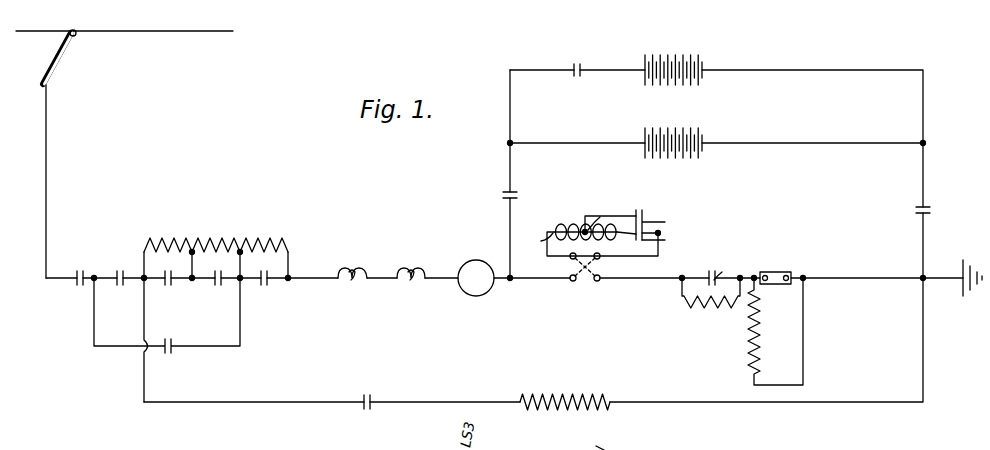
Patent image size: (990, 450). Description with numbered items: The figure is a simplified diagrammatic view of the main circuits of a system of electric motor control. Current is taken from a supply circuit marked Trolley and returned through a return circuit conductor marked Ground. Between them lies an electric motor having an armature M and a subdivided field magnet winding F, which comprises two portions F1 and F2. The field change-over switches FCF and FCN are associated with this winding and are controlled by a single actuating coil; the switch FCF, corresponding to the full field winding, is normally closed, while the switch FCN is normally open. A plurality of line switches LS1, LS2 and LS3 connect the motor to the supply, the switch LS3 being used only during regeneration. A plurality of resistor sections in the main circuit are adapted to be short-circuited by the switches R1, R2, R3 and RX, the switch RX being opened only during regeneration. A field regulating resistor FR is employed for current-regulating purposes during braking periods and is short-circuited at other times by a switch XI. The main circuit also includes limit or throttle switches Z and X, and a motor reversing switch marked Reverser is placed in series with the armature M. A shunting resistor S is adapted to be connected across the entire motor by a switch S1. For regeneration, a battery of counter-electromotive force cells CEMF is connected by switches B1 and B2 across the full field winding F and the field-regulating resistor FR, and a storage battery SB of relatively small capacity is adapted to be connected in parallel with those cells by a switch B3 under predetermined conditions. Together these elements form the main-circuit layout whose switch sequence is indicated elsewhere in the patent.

The supply circuit Trolley is at (124, 154).
The line switch LS1 is at (78, 290).
The line switch LS2 is at (122, 290).
The line switch LS3 is at (167, 326).
The resistor short-circuiting switch R1 is at (169, 290).
The resistor short-circuiting switch R2 is at (219, 290).
The resistor short-circuiting switch R3 is at (266, 290).
The limit or throttle switch Z is at (352, 288).
The limit or throttle switch X is at (411, 288).
The armature M is at (476, 278).
The battery switch B1 is at (495, 197).
The battery switch B2 is at (911, 211).
The storage battery switch B3 is at (575, 85).
The storage battery SB is at (688, 80).
The counter-electromotive force cells CEMF is at (694, 156).
The field magnet winding F is at (602, 228).
The field winding portion F1 is at (535, 242).
The field winding portion F2 is at (610, 217).
The field change-over switch FCN is at (670, 225).
The field change-over switch FCF is at (671, 243).
The motor reversing switch Reverser is at (601, 281).
The resistor short-circuiting switch RX is at (714, 281).
The field-resistor short-circuiting switch XI is at (775, 267).
The field regulating resistor FR is at (775, 331).
The return circuit conductor Ground is at (959, 291).
The shunting resistor switch S1 is at (368, 391).
The shunting resistor S is at (565, 392).